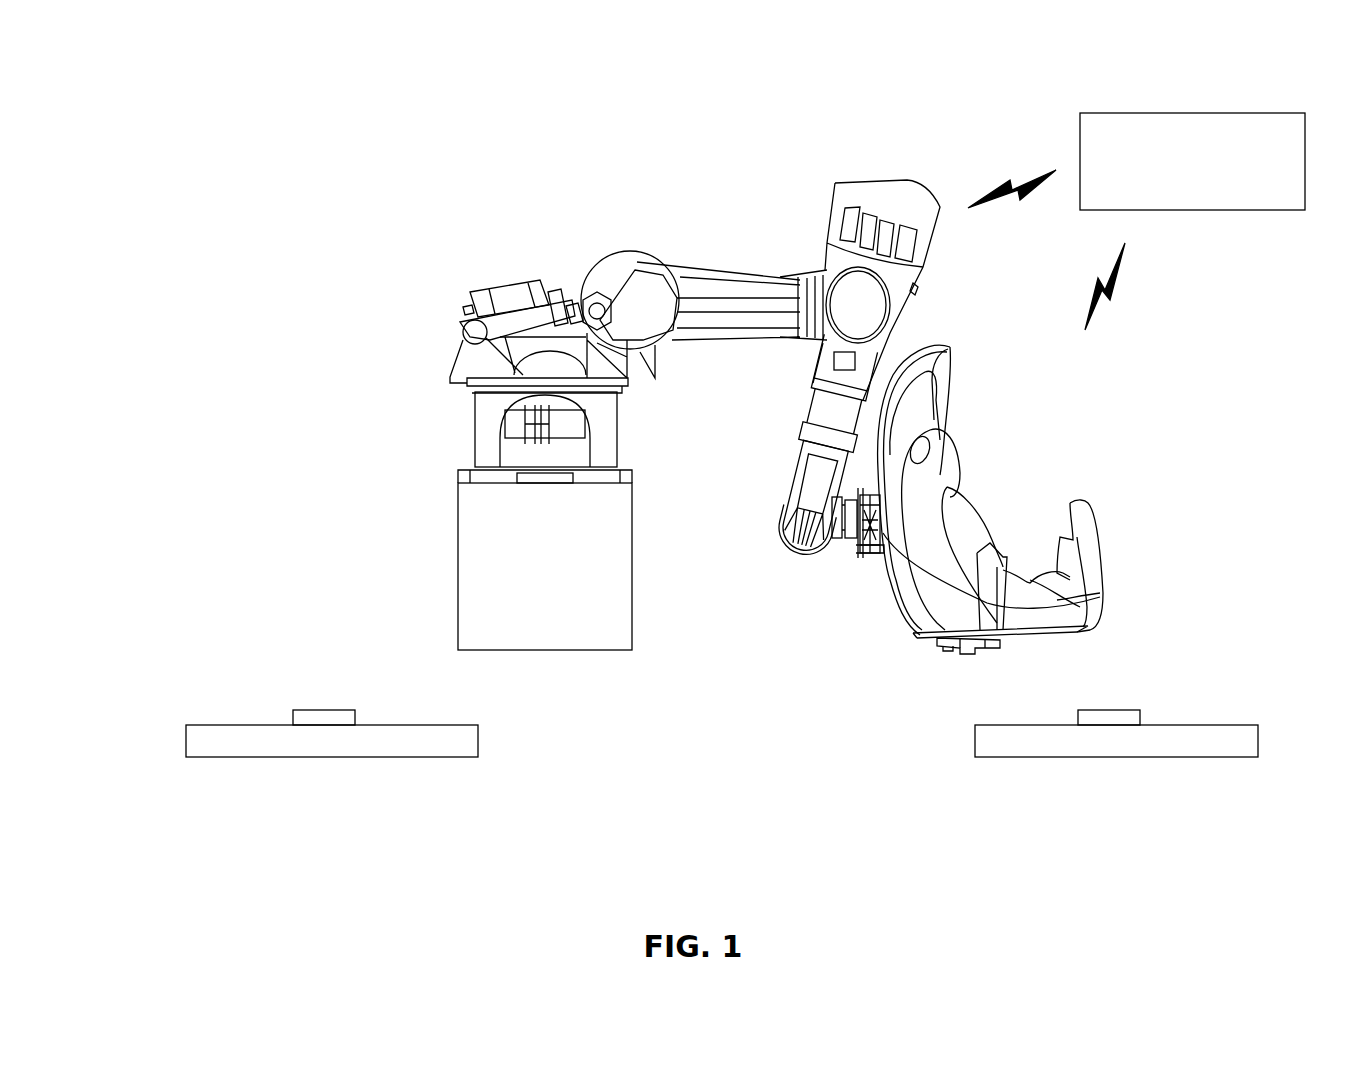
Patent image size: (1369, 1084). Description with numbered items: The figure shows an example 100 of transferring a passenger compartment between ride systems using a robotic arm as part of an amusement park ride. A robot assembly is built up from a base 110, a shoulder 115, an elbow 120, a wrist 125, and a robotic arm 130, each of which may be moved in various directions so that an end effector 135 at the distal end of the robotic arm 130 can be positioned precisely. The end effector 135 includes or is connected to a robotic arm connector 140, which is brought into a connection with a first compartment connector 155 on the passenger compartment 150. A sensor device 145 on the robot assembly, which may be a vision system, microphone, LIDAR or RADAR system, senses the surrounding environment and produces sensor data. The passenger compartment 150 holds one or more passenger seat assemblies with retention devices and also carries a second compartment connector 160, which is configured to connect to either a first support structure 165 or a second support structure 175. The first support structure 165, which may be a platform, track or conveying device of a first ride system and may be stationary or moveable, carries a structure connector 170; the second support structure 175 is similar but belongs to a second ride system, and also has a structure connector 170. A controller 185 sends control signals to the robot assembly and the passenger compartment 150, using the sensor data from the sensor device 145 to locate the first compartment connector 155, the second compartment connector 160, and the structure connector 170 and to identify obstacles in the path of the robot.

The example 100 is at (203, 63).
The base 110 is at (468, 460).
The shoulder 115 is at (622, 250).
The elbow 120 is at (863, 295).
The wrist 125 is at (787, 520).
The robotic arm 130 is at (680, 332).
The end effector 135 is at (833, 543).
The robotic arm connector 140 is at (857, 548).
The sensor device 145 is at (838, 360).
The passenger compartment 150 is at (958, 430).
The first compartment connector 155 is at (873, 558).
The second compartment connector 160 is at (945, 654).
The first support structure 165 is at (405, 758).
The structure connector 170 is at (317, 710).
The second support structure 175 is at (1003, 758).
The controller 185 is at (1192, 161).